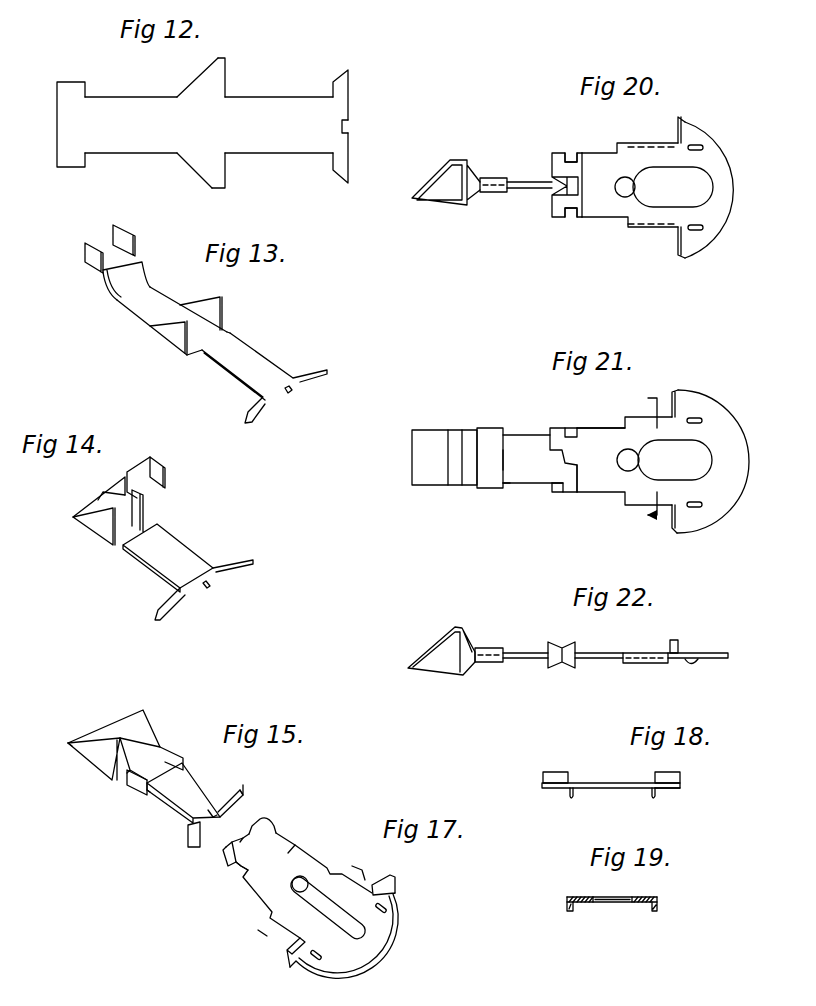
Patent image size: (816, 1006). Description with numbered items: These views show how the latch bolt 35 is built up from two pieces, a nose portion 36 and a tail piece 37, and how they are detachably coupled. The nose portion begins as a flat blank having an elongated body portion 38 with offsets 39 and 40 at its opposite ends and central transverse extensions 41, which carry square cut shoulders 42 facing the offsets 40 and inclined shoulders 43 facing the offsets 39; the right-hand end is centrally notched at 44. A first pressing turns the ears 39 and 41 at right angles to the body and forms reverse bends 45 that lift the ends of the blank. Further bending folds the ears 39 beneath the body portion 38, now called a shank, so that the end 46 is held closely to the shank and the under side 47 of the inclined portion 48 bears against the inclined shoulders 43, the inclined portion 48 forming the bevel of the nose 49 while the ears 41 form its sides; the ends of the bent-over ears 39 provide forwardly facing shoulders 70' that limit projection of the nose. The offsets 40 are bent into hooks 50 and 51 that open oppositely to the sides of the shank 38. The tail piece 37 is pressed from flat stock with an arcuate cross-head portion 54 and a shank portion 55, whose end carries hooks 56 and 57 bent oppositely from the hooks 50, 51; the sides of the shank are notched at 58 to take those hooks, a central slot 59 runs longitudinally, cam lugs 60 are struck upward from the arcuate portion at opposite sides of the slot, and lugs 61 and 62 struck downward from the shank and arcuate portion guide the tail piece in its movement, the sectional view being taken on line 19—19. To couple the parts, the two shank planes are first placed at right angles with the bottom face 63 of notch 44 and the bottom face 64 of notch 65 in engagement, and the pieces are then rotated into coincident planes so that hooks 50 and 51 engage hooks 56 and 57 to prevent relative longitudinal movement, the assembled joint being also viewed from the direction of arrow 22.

In FIG. 17, the section line 19— 19 is at (310, 906).
In FIG. 21, the section line 19— 19 is at (643, 460).
In FIG. 21, the arrow 22 is at (512, 500).
In FIG. 21, the latch bolt 35 is at (544, 492).
In FIG. 22, the latch bolt 35 is at (568, 672).
In FIG. 15, the nose portion 36 is at (138, 797).
In FIG. 20, the nose portion 36 is at (520, 178).
In FIG. 21, the nose portion 36 is at (515, 432).
In FIG. 22, the nose portion 36 is at (525, 652).
In FIG. 17, the tail piece 37 is at (317, 855).
In FIG. 20, the tail piece 37 is at (620, 150).
In FIG. 21, the tail piece 37 is at (605, 483).
In FIG. 22, the tail piece 37 is at (615, 652).
In FIG. 18, the tail piece 37 is at (602, 782).
In FIG. 19, the tail piece 37 is at (582, 895).
In FIG. 12, the body portion 38 is at (118, 107).
In FIG. 14, the body portion 38 is at (172, 552).
In FIG. 15, the body portion 38 is at (180, 797).
In FIG. 21, the body portion 38 is at (525, 440).
In FIG. 22, the body portion 38 is at (513, 659).
In FIG. 12, the offsets 39 is at (67, 90).
In FIG. 13, the offsets 39 is at (83, 255).
In FIG. 14, the offsets 39 is at (167, 470).
In FIG. 15, the offsets 39 is at (153, 798).
In FIG. 20, the offsets 39 is at (495, 192).
In FIG. 22, the offsets 39 is at (487, 663).
In FIG. 12, the offsets 40 is at (348, 85).
In FIG. 13, the offsets 40 is at (313, 378).
In FIG. 14, the offsets 40 is at (233, 567).
In FIG. 12, the central transverse extensions 41 is at (218, 72).
In FIG. 13, the central transverse extensions 41 is at (227, 315).
In FIG. 14, the central transverse extensions 41 is at (100, 525).
In FIG. 15, the central transverse extensions 41 is at (100, 752).
In FIG. 12, the square cut shoulders 42 is at (227, 85).
In FIG. 13, the square cut shoulders 42 is at (187, 352).
In FIG. 12, the inclined shoulders 43 is at (197, 77).
In FIG. 13, the inclined shoulders 43 is at (187, 303).
In FIG. 12, the notch 44 is at (347, 127).
In FIG. 13, the notch 44 is at (288, 396).
In FIG. 14, the notch 44 is at (205, 587).
In FIG. 15, the notch 44 is at (219, 810).
In FIG. 13, the reverse bends 45 is at (113, 283).
In FIG. 14, the end 46 is at (133, 470).
In FIG. 14, the under side 47 is at (90, 502).
In FIG. 14, the inclined portion 48 is at (103, 492).
In FIG. 15, the inclined portion 48 is at (108, 727).
In FIG. 15, the nose 49 is at (66, 743).
In FIG. 20, the nose 49 is at (420, 205).
In FIG. 21, the nose 49 is at (420, 452).
In FIG. 22, the nose 49 is at (432, 657).
In FIG. 15, the hook 50 is at (190, 843).
In FIG. 21, the hook 50 is at (565, 492).
In FIG. 15, the hook 51 is at (240, 793).
In FIG. 21, the hook 51 is at (572, 428).
In FIG. 17, the arcuate cross-head portion 54 is at (373, 943).
In FIG. 20, the arcuate cross-head portion 54 is at (725, 200).
In FIG. 21, the arcuate cross-head portion 54 is at (725, 447).
In FIG. 18, the arcuate cross-head portion 54 is at (667, 797).
In FIG. 17, the shank portion 55 is at (288, 853).
In FIG. 20, the shank portion 55 is at (597, 168).
In FIG. 21, the shank portion 55 is at (603, 437).
In FIG. 17, the hook 56 is at (225, 863).
In FIG. 20, the hook 56 is at (562, 218).
In FIG. 21, the hook 56 is at (557, 493).
In FIG. 17, the hook 57 is at (275, 828).
In FIG. 17, the notches 58 is at (238, 872).
In FIG. 20, the notches 58 is at (572, 158).
In FIG. 17, the central slot 59 is at (337, 917).
In FIG. 20, the central slot 59 is at (664, 187).
In FIG. 21, the central slot 59 is at (664, 460).
In FIG. 19, the central slot 59 is at (617, 902).
In FIG. 17, the cam lugs 60 is at (390, 875).
In FIG. 20, the cam lugs 60 is at (685, 127).
In FIG. 21, the cam lugs 60 is at (682, 398).
In FIG. 22, the cam lugs 60 is at (678, 642).
In FIG. 18, the cam lugs 60 is at (553, 772).
In FIG. 22, the lug 61 is at (643, 665).
In FIG. 19, the lug 61 is at (568, 910).
In FIG. 22, the lug 62 is at (690, 666).
In FIG. 18, the lug 62 is at (605, 806).
In FIG. 15, the bottom face 63 is at (213, 817).
In FIG. 17, the bottom face 64 is at (256, 842).
In FIG. 17, the notch 65 is at (243, 838).
In FIG. 15, the forwardly facing shoulders 70' is at (108, 777).